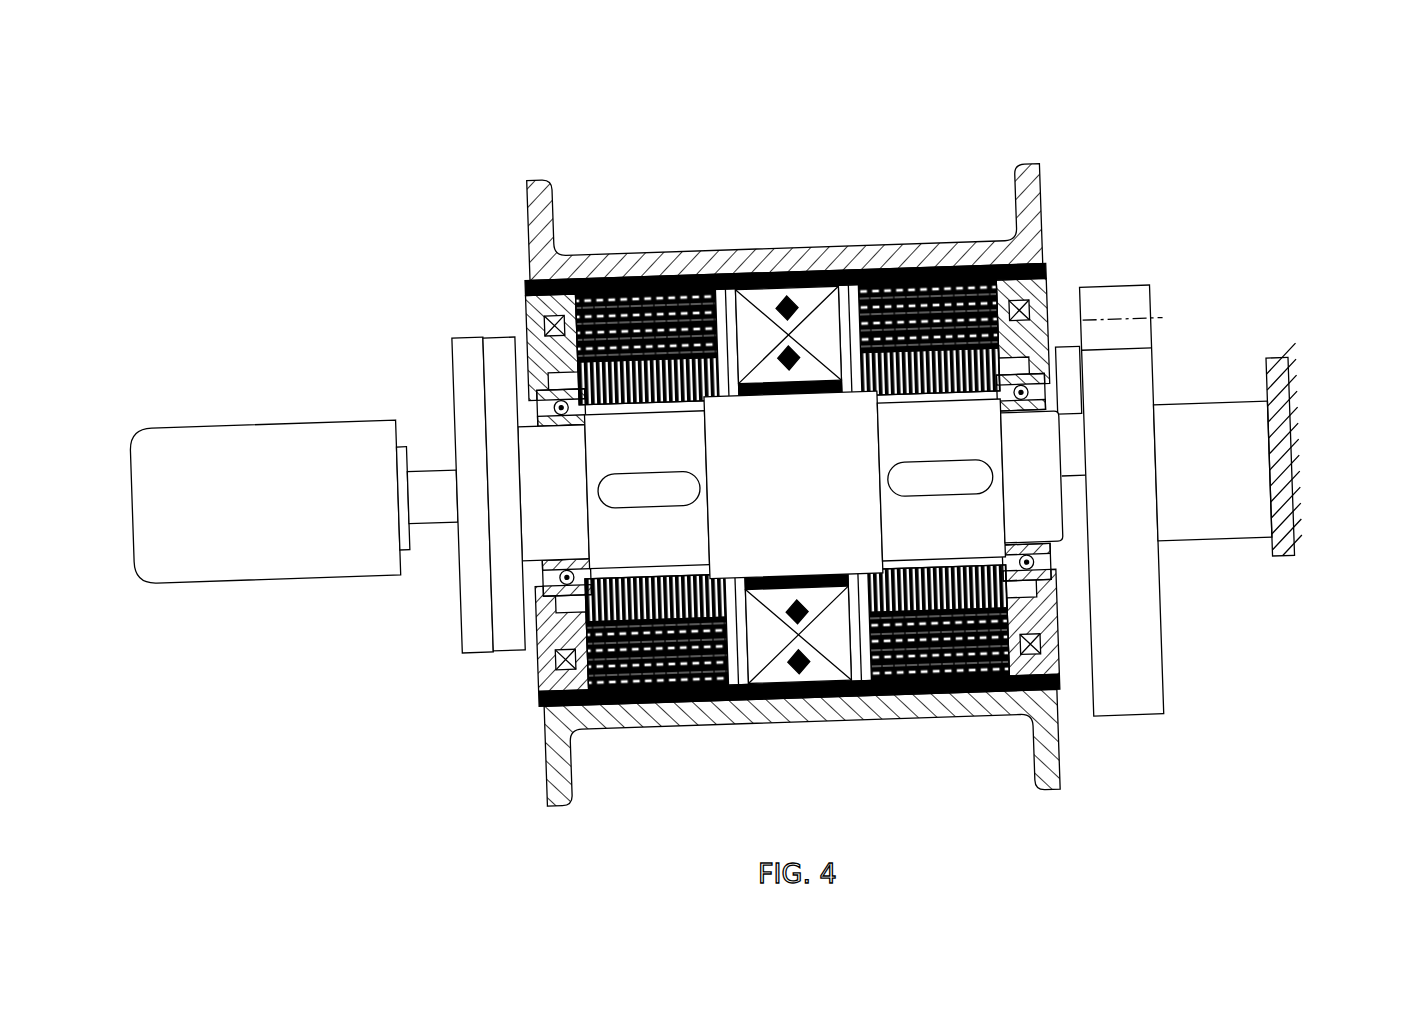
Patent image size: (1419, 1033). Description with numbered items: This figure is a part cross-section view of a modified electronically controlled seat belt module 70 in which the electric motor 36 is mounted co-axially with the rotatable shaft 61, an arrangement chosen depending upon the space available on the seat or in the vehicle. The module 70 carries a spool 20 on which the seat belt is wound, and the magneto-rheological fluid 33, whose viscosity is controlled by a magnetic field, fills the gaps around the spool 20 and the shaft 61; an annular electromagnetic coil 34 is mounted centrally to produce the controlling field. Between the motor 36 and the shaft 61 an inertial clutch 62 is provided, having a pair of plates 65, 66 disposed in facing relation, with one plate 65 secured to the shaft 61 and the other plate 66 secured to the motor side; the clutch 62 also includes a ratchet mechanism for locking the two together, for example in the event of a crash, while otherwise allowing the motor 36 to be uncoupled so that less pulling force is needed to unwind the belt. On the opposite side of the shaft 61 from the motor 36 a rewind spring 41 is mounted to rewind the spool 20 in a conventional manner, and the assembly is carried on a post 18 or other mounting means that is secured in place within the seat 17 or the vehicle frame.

The module 70 is at (940, 147).
The spool 20 is at (790, 713).
The magneto-rheological fluid 33 is at (658, 287).
The electromagnetic coil 34 is at (808, 300).
The electric motor 36 is at (270, 465).
The inertial clutch 62 is at (467, 491).
The plate 65 is at (508, 640).
The plate 66 is at (472, 642).
The rotatable shaft 61 is at (1037, 513).
The rewind spring 41 is at (1133, 393).
The post 18 is at (1210, 420).
The seat 17 is at (1290, 515).